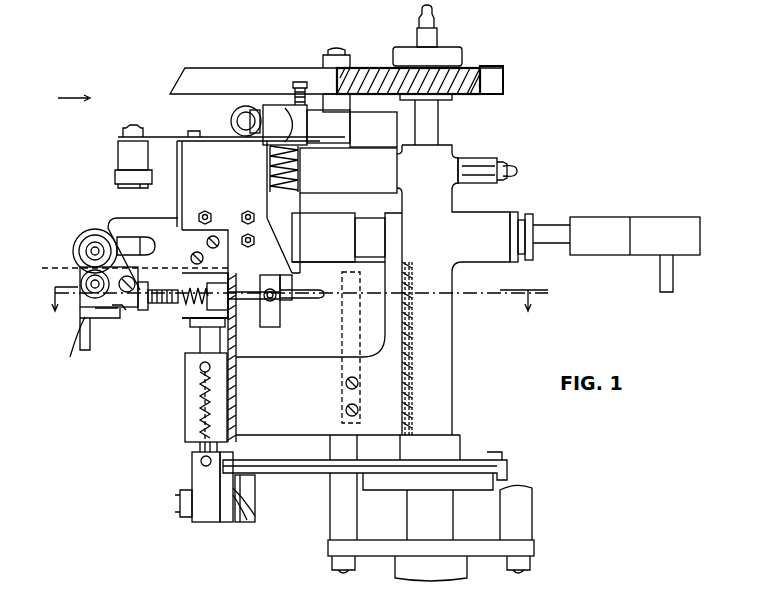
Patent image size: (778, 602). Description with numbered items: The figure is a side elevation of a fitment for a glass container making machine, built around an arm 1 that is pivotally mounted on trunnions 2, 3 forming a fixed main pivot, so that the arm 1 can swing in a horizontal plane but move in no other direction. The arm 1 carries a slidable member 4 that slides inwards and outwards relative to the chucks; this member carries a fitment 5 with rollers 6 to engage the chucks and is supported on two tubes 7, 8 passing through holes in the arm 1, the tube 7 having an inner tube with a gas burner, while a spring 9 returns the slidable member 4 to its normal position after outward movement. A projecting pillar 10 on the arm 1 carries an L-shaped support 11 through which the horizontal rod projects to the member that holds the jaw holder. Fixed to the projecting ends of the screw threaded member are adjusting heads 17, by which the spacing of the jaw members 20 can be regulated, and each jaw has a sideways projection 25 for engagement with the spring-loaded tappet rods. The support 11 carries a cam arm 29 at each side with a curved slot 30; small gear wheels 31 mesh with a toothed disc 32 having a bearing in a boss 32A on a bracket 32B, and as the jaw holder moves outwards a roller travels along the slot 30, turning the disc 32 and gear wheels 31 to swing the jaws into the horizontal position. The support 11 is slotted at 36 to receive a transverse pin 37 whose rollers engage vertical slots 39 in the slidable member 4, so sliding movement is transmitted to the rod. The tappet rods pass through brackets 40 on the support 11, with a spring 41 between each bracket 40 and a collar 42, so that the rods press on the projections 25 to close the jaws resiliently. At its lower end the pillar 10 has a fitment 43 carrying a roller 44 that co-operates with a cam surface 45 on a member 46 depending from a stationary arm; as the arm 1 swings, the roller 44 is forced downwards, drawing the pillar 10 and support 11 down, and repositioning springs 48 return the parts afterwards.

The arm 1 is at (428, 365).
The trunnion 2 is at (423, 125).
The trunnion 3 is at (74, 89).
The slidable member 4 is at (230, 184).
The fitment 5 is at (231, 125).
The roller 6 is at (125, 177).
The tube 7 is at (279, 240).
The tube 8 is at (283, 157).
The spring 9 is at (298, 170).
The pillar 10 is at (202, 337).
The L-shaped support 11 is at (318, 303).
The adjusting head 17 is at (82, 238).
The jaw member 20 is at (88, 343).
The sideways projection 25 is at (72, 347).
The cam arm 29 is at (140, 230).
The curved slot 30 is at (118, 250).
The gear wheel 31 is at (298, 313).
The disc 32 is at (124, 282).
The boss 32A is at (75, 248).
The bracket 32B is at (110, 312).
The horizontal slot 36 is at (303, 302).
The transverse pin 37 is at (268, 305).
The vertical slot 39 is at (265, 320).
The bracket 40 is at (218, 303).
The spring 41 is at (182, 285).
The collar 42 is at (167, 300).
The fitment 43 is at (205, 513).
The roller 44 is at (232, 515).
The cam surface 45 is at (240, 507).
The member 46 is at (298, 468).
The repositioning spring 48 is at (200, 400).